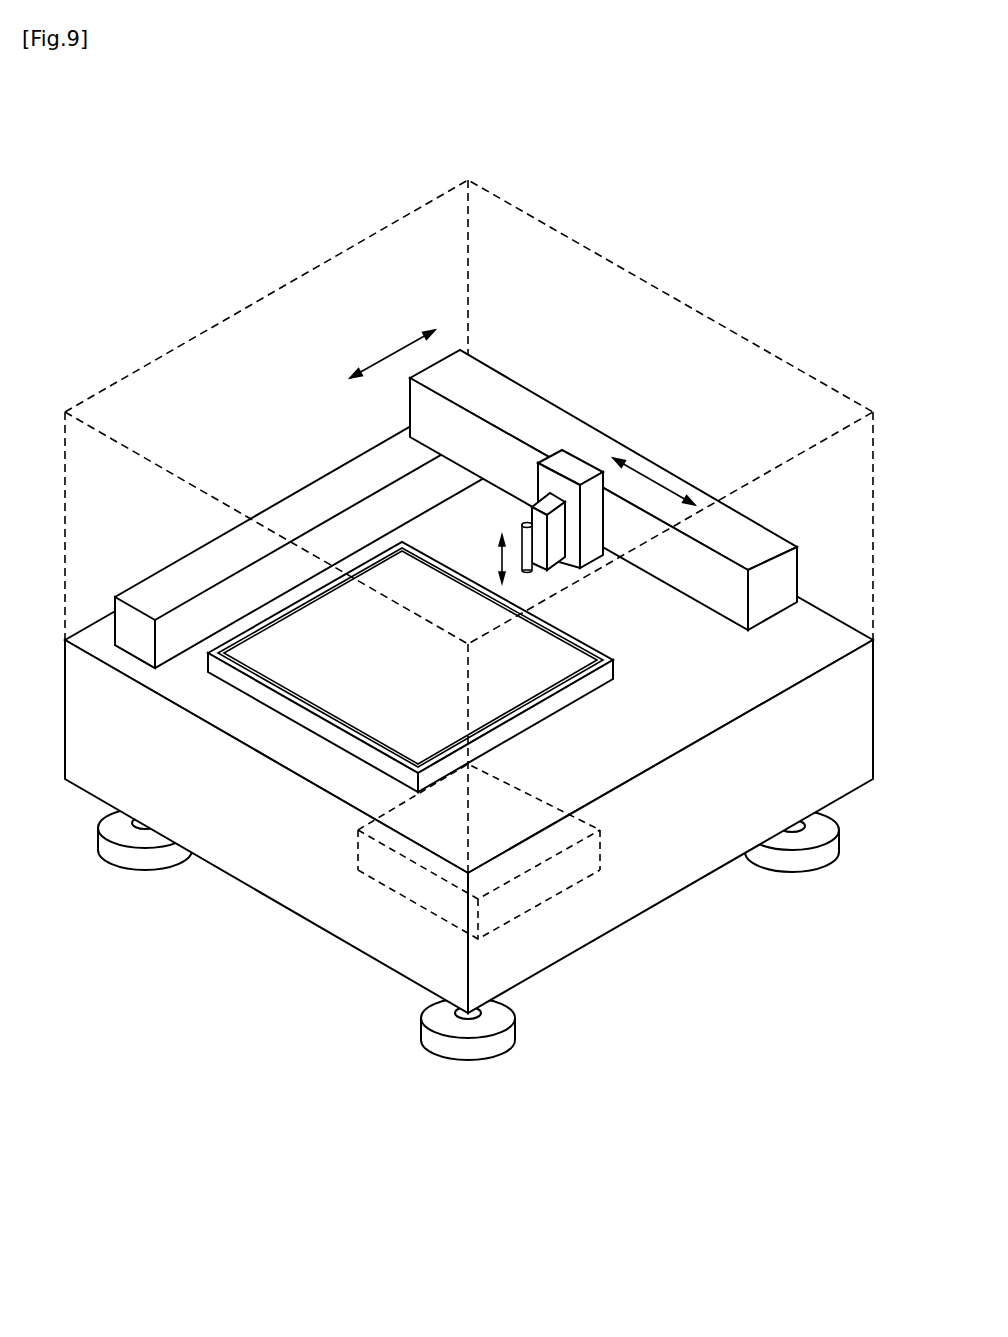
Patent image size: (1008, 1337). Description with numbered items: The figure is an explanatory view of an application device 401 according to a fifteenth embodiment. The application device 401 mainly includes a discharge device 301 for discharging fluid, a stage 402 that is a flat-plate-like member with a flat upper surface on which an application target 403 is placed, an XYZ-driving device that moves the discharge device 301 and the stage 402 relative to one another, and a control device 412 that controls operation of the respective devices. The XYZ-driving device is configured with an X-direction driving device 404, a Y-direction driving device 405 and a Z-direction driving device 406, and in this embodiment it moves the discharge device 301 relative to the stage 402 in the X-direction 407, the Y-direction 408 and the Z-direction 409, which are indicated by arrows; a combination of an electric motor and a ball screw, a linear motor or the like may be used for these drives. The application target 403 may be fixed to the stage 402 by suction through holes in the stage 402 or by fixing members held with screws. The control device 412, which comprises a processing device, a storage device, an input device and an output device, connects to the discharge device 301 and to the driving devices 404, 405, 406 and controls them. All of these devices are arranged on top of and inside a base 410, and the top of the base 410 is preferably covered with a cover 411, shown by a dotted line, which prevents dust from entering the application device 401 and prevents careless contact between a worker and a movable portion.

The discharge device 301 is at (597, 355).
The application device 401 is at (484, 647).
The stage 402 is at (387, 779).
The application target 403 is at (410, 790).
The X-direction driving device 404 is at (657, 464).
The Y-direction driving device 405 is at (312, 426).
The Z-direction driving device 406 is at (648, 380).
The X-direction 407 is at (720, 376).
The Y-direction 408 is at (358, 260).
The Z-direction 409 is at (533, 332).
The base 410 is at (469, 734).
The cover 411 is at (469, 526).
The control device 412 is at (518, 911).